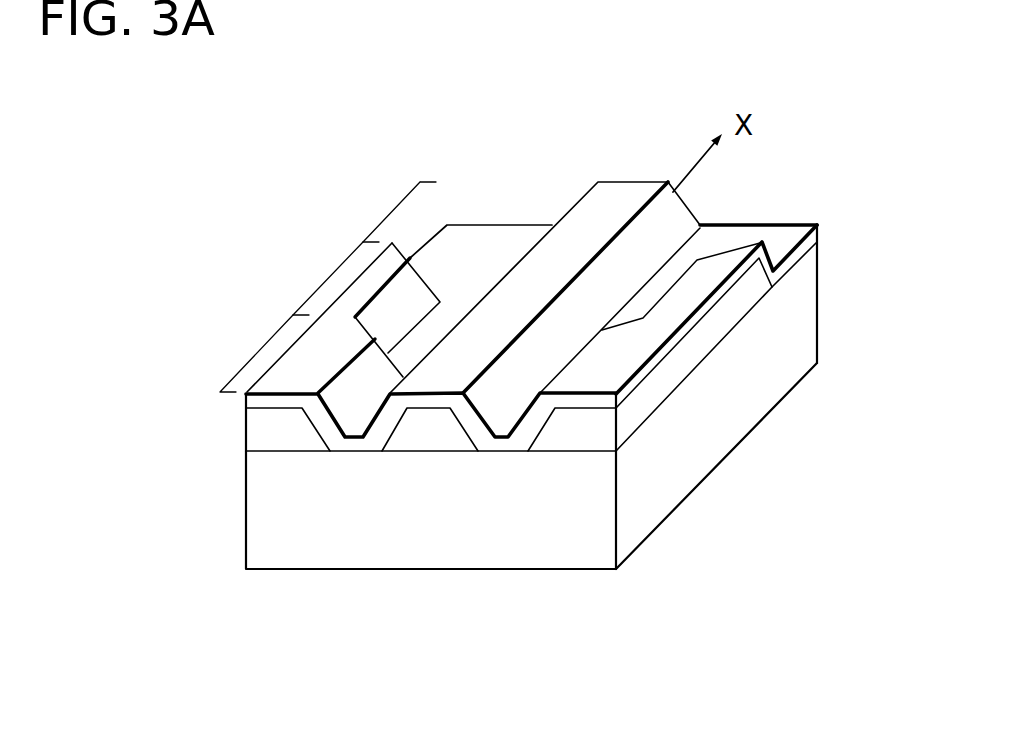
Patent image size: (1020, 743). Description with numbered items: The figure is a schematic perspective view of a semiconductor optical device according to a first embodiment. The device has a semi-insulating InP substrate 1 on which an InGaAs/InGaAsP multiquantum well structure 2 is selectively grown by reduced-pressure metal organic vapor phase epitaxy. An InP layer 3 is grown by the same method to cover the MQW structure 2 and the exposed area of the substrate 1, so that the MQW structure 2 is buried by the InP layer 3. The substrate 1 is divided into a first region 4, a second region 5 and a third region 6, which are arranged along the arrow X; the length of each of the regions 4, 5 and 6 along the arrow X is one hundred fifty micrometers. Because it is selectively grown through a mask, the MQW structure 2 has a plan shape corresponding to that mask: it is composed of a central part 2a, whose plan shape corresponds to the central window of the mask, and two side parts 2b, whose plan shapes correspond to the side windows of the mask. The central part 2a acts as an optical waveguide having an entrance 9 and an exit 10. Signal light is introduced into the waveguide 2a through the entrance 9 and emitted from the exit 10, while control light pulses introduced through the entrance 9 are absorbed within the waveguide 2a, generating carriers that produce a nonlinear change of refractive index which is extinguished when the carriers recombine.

The semi-insulating InP substrate 1 is at (265, 530).
The multiquantum well structure 2 is at (647, 403).
The central part 2a is at (422, 443).
The side parts 2b is at (258, 438).
The InP layer 3 is at (258, 404).
The first region 4 is at (261, 353).
The second region 5 is at (366, 309).
The third region 6 is at (399, 208).
The entrance 9 is at (438, 436).
The exit 10 is at (655, 180).